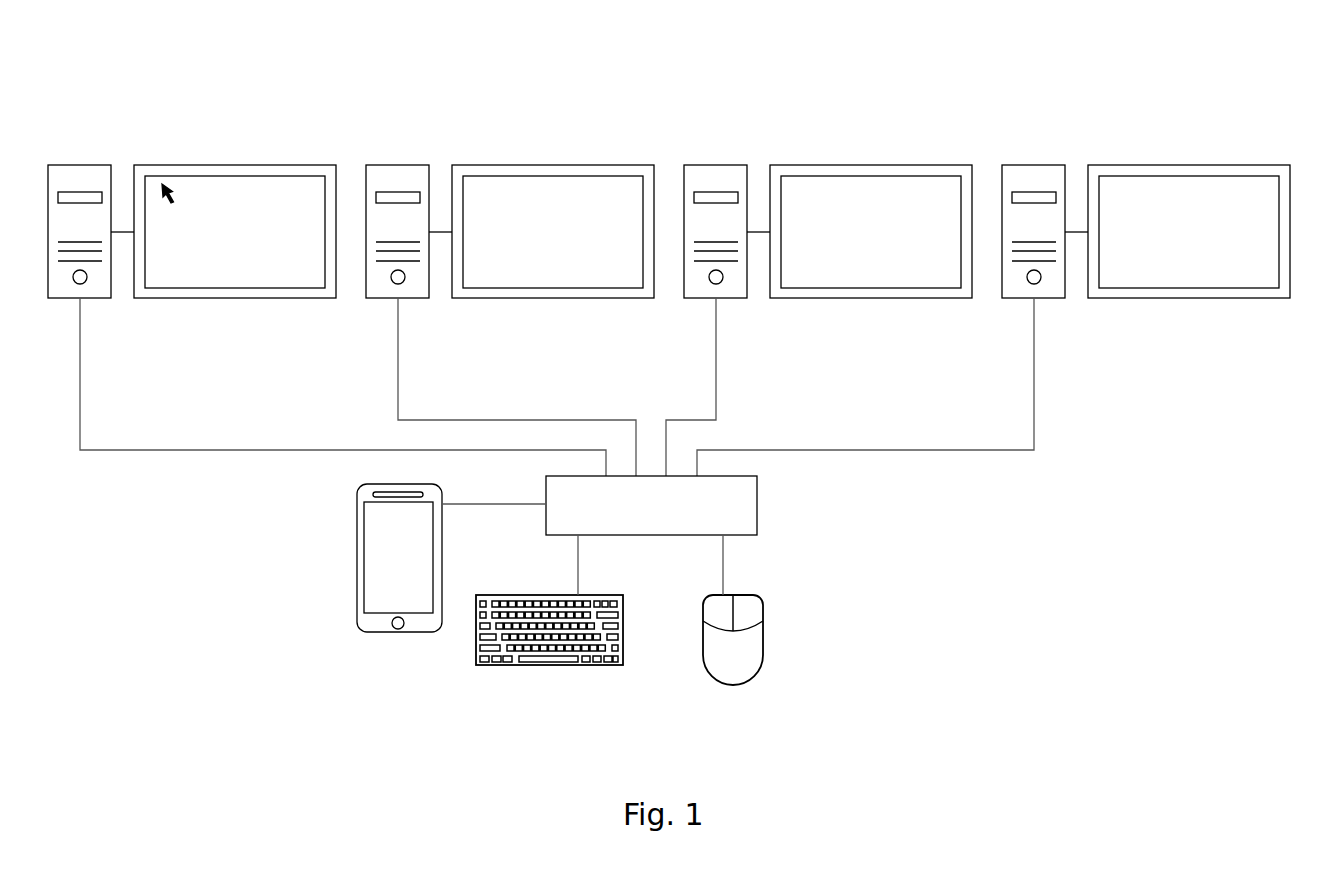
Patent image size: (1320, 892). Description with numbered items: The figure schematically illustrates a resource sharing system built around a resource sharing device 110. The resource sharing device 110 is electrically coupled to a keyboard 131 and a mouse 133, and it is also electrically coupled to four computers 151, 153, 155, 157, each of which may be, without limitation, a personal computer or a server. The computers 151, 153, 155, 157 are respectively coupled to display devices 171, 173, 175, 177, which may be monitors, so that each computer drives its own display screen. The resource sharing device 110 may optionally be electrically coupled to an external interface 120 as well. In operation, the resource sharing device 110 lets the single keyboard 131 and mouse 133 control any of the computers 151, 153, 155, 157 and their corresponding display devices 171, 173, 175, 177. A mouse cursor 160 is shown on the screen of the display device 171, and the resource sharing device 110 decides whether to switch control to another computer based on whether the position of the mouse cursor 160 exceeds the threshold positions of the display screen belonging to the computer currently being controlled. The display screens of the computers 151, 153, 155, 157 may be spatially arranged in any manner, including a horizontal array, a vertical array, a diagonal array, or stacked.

The resource sharing device 110 is at (681, 525).
The external interface 120 is at (378, 635).
The keyboard 131 is at (508, 668).
The mouse 133 is at (763, 638).
The computer 151 is at (81, 165).
The computer 153 is at (399, 165).
The computer 155 is at (716, 165).
The computer 157 is at (1034, 165).
The mouse cursor 160 is at (172, 186).
The display device 171 is at (237, 165).
The display device 173 is at (556, 165).
The display device 175 is at (873, 165).
The display device 177 is at (1191, 165).